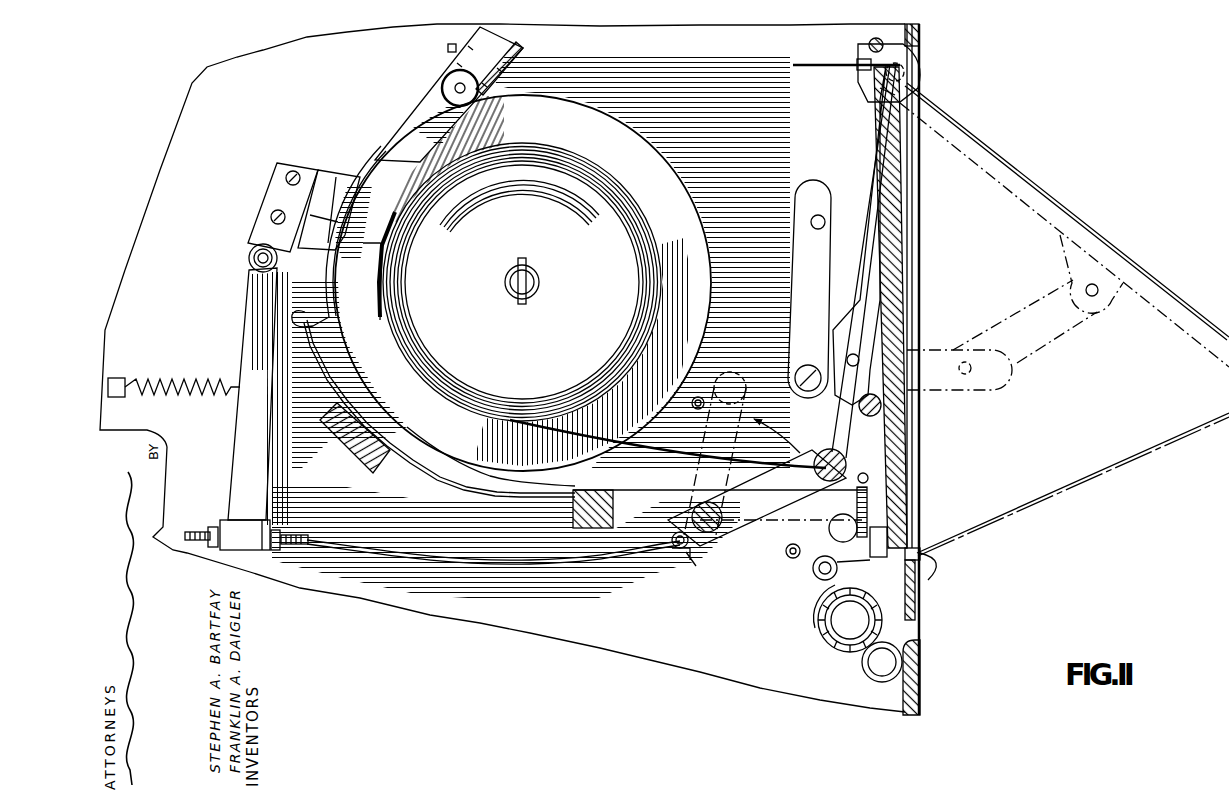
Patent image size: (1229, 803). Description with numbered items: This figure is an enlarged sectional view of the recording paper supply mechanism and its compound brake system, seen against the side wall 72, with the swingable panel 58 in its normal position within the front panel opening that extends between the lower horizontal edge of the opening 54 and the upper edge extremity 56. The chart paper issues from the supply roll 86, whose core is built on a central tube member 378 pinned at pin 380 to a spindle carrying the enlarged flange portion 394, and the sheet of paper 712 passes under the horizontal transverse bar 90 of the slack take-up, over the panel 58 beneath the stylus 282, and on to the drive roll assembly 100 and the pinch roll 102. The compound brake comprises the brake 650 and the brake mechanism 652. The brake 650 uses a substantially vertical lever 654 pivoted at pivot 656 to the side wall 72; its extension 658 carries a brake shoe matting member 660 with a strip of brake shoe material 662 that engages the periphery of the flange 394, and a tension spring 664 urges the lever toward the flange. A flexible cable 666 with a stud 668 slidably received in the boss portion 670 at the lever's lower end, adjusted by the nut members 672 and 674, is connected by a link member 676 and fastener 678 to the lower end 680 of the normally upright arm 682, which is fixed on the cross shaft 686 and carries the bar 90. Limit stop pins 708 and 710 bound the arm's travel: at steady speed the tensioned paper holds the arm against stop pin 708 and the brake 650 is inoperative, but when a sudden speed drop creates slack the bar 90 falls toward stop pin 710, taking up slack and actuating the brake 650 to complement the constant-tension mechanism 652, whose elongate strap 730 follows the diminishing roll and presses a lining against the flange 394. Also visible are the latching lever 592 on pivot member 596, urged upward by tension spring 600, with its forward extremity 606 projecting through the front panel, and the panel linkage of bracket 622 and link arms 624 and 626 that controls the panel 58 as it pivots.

The lower horizontal edge of the opening 54 is at (922, 553).
The upper edge extremity of the opening 56 is at (924, 46).
The swingable panel 58 is at (905, 195).
The side wall 72 is at (747, 108).
The supply roll 86 is at (660, 196).
The horizontal transverse bar 90 is at (744, 386).
The drive roll assembly 100 is at (820, 636).
The pinch roll 102 is at (862, 668).
The stylus 282 is at (832, 63).
The central tube member 378 is at (510, 294).
The pin 380 is at (532, 296).
The enlarged flange portion 394 is at (635, 143).
The latching lever 592 is at (818, 603).
The pivot member 596 is at (838, 570).
The tension spring 600 is at (868, 503).
The forward extremity of the latching lever 606 is at (934, 572).
The panel bracket 622 is at (1068, 268).
The link arm 624 is at (908, 276).
The link arm 626 is at (800, 293).
The brake 650 is at (323, 157).
The brake mechanism 652 is at (386, 231).
The lever 654 is at (233, 453).
The pivot 656 is at (258, 253).
The extension 658 is at (278, 173).
The brake shoe matting member 660 is at (340, 180).
The strip of brake shoe material 662 is at (333, 230).
The tension spring 664 is at (185, 378).
The flexible cable 666 is at (573, 560).
The stud 668 is at (303, 534).
The boss portion 670 is at (240, 550).
The nut member 672 is at (207, 545).
The nut member 674 is at (278, 550).
The link member 676 is at (671, 548).
The fastener 678 is at (688, 553).
The lower end of the arm 680 is at (608, 516).
The arm 682 is at (750, 514).
The cross shaft 686 is at (717, 548).
The limit stop pin 708 is at (697, 397).
The limit stop pin 710 is at (788, 557).
The sheet of paper 712 is at (742, 450).
The elongate strap 730 is at (395, 153).